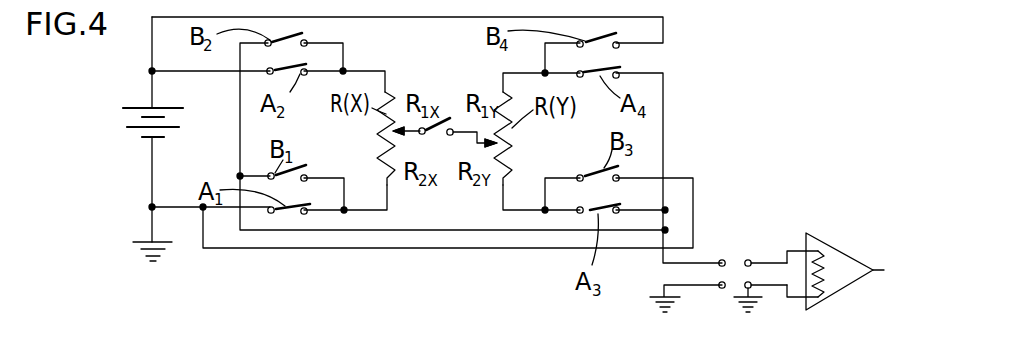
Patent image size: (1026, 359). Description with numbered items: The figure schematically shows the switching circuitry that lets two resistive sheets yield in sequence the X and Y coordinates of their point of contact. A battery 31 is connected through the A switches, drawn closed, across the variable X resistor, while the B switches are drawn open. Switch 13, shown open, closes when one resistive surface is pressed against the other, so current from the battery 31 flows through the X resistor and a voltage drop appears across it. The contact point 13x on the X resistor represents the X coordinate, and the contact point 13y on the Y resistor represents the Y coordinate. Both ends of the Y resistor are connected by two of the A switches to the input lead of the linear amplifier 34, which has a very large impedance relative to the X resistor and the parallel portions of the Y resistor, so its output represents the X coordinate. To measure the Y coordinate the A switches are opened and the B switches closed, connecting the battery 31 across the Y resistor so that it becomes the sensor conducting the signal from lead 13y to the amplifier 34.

The battery 31 is at (132, 108).
The switch 13 is at (448, 117).
The contact point 13x is at (413, 133).
The contact point 13y is at (494, 155).
The linear amplifier 34 is at (832, 248).